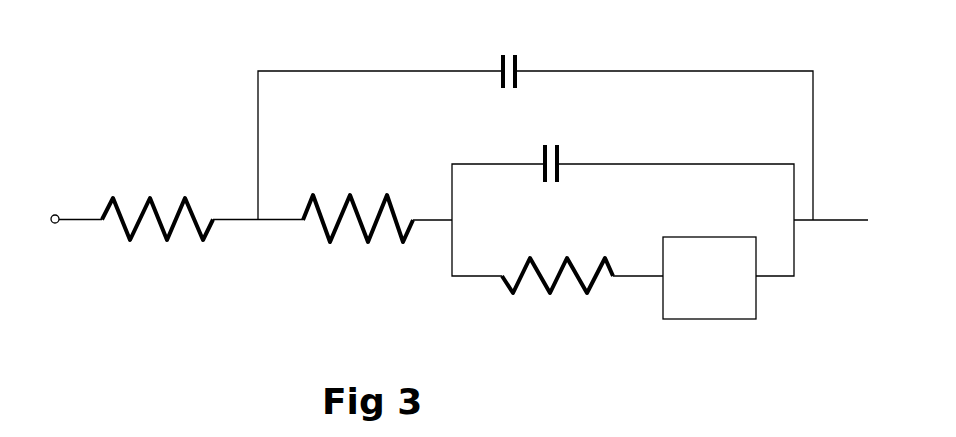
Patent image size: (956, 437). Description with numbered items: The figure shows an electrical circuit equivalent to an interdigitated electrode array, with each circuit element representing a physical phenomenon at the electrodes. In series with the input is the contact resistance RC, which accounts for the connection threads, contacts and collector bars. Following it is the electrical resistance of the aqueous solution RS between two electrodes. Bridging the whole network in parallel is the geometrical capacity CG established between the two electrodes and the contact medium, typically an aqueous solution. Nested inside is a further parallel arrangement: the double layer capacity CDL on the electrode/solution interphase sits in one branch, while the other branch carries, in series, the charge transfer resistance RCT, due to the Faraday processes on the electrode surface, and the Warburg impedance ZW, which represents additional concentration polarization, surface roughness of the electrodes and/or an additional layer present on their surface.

The contact resistance RC is at (157, 175).
The electrical resistance of the aqueous solution RS is at (358, 179).
The geometrical capacity CG is at (512, 44).
The double layer capacity CDL is at (552, 137).
The charge transfer resistance RCT is at (557, 312).
The Warburg impedance ZW is at (709, 278).